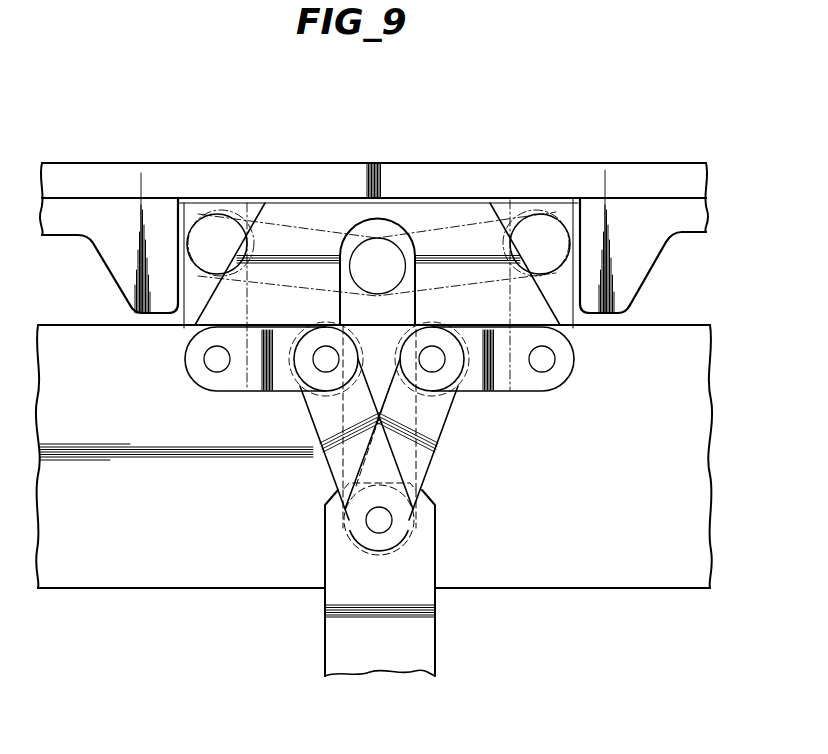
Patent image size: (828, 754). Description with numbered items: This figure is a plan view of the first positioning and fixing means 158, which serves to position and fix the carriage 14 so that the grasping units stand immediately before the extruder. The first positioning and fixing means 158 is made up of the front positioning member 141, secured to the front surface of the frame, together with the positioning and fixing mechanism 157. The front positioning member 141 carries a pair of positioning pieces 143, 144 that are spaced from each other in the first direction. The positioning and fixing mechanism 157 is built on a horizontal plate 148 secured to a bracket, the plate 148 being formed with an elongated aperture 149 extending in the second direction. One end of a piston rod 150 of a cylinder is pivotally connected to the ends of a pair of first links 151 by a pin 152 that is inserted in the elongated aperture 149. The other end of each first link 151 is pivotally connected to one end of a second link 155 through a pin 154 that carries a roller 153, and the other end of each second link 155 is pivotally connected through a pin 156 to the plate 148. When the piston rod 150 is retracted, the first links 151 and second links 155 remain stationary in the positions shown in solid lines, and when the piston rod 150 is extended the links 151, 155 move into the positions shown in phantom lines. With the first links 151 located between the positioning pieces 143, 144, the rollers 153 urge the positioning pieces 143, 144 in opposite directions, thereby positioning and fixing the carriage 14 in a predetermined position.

The carriage 14 is at (488, 162).
The front positioning member 141 is at (661, 266).
The positioning piece 143 is at (123, 276).
The positioning piece 144 is at (627, 288).
The horizontal plate 148 is at (591, 572).
The elongated aperture 149 is at (402, 316).
The piston rod 150 is at (418, 643).
The first link 151 is at (320, 425).
The pin 152 is at (383, 522).
The roller 153 is at (402, 325).
The pin 154 is at (438, 357).
The second link 155 is at (252, 381).
The pin 156 is at (212, 360).
The positioning and fixing mechanism 157 is at (450, 485).
The first positioning and fixing means 158 is at (700, 382).